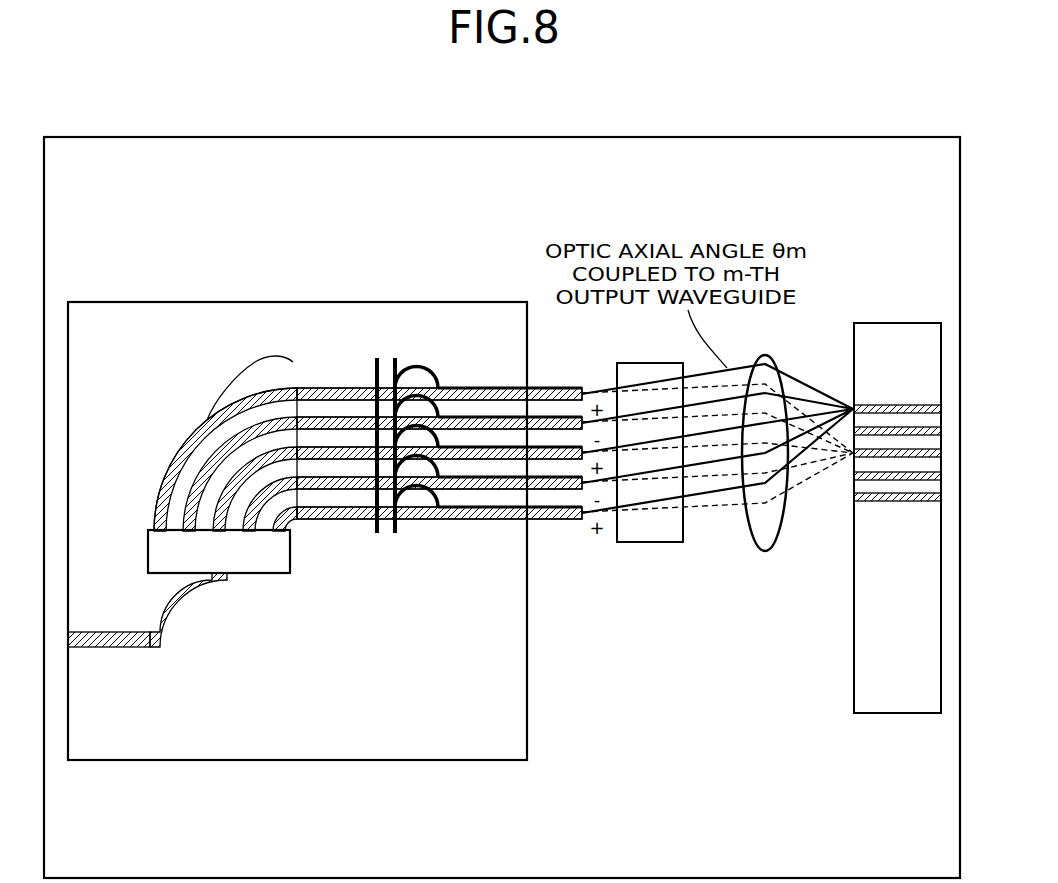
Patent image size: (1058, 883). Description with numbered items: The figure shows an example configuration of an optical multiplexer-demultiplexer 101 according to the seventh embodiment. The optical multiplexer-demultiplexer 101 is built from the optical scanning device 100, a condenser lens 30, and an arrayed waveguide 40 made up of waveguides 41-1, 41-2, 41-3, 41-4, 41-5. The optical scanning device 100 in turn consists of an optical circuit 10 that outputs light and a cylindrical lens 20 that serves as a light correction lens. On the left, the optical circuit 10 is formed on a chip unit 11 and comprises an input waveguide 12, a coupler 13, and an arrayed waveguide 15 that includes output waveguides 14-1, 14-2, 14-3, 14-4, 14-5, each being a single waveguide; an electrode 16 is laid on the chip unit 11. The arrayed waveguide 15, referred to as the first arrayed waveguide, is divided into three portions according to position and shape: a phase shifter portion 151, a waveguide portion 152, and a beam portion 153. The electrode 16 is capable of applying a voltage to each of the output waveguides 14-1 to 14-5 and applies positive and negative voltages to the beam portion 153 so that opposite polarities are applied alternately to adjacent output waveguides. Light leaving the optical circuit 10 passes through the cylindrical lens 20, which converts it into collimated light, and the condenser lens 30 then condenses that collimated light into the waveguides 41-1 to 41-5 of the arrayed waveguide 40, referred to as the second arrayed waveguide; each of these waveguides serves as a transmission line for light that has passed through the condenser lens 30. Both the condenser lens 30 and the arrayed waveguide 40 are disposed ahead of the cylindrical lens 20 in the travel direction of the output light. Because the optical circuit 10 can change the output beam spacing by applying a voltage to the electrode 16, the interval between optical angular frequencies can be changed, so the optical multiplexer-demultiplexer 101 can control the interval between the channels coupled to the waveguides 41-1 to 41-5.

The optical multiplexer-demultiplexer 101 is at (873, 137).
The optical scanning device 100 is at (68, 188).
The optical circuit 10 is at (68, 223).
The chip unit 11 is at (507, 760).
The input waveguide 12 is at (118, 647).
The coupler 13 is at (250, 573).
The output waveguide 14-1 is at (358, 519).
The output waveguide 14-2 is at (350, 489).
The output waveguide 14-3 is at (342, 459).
The output waveguide 14-4 is at (327, 429).
The output waveguide 14-5 is at (313, 400).
The arrayed waveguide 15 is at (378, 261).
The phase shifter portion 151 is at (136, 531).
The waveguide portion 152 is at (527, 360).
The beam portion 153 is at (582, 360).
The electrode 16 is at (366, 550).
The cylindrical lens 20 is at (652, 542).
The condenser lens 30 is at (765, 551).
The arrayed waveguide 40 is at (898, 713).
The waveguide 41-1 is at (925, 501).
The waveguide 41-2 is at (898, 480).
The waveguide 41-3 is at (868, 449).
The waveguide 41-4 is at (897, 427).
The waveguide 41-5 is at (925, 405).